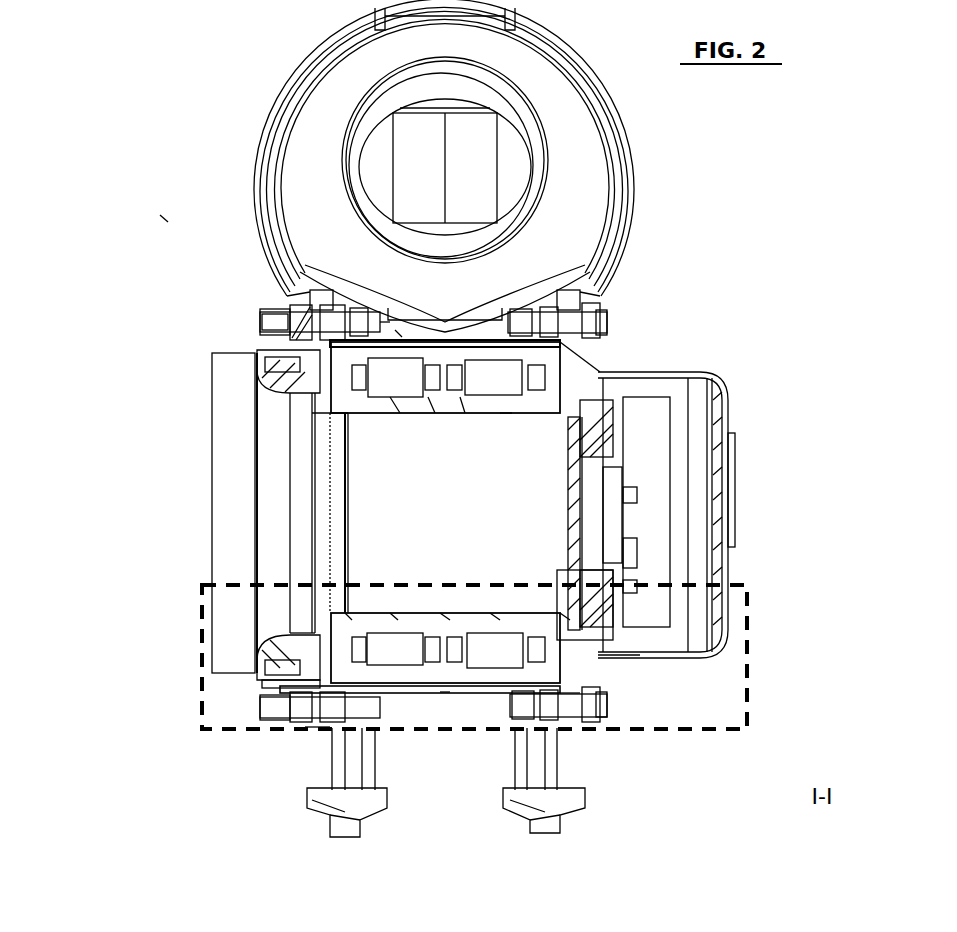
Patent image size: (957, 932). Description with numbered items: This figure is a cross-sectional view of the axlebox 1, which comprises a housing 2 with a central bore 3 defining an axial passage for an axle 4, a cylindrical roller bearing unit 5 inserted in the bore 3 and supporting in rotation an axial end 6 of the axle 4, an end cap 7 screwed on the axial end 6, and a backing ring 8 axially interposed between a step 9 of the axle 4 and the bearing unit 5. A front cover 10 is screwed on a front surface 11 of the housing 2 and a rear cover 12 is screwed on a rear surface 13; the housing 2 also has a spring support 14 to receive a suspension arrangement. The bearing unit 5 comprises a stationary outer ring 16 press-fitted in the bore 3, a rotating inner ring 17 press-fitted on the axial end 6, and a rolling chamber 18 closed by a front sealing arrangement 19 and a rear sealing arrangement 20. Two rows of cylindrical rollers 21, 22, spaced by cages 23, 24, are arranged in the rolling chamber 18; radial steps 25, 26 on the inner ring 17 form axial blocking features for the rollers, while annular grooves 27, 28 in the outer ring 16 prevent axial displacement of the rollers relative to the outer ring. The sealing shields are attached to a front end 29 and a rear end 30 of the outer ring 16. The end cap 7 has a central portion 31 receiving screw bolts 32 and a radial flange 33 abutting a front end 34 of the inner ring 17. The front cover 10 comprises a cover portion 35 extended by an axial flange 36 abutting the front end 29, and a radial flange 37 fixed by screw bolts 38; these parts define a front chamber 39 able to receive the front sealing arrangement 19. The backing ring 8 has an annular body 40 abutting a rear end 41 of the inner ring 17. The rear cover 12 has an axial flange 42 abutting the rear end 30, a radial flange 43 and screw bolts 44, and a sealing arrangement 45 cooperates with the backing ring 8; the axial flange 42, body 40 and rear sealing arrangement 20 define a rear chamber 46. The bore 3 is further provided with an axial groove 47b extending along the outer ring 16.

The axlebox 1 is at (165, 222).
The housing 2 is at (573, 250).
The central bore 3 is at (620, 360).
The axle 4 is at (208, 500).
The cylindrical roller bearing unit 5 is at (505, 417).
The axial end 6 is at (445, 512).
The end cap 7 is at (605, 440).
The backing ring 8 is at (270, 640).
The step 9 is at (305, 630).
The front cover 10 is at (725, 372).
The front surface 11 is at (600, 312).
The rear cover 12 is at (280, 715).
The rear surface 13 is at (310, 300).
The spring support 14 is at (580, 133).
The outer ring 16 is at (400, 335).
The inner ring 17 is at (395, 415).
The rolling chamber 18 is at (445, 615).
The front sealing arrangement 19 is at (510, 725).
The rear sealing arrangement 20 is at (305, 725).
The cylindrical rollers 21 is at (493, 377).
The cylindrical rollers 22 is at (395, 377).
The cage 23 is at (462, 415).
The cage 24 is at (430, 415).
The radial step 25 is at (495, 615).
The radial step 26 is at (395, 615).
The annular groove 27 is at (470, 700).
The annular groove 28 is at (385, 660).
The front end 29 is at (590, 350).
The rear end 30 is at (255, 358).
The central portion 31 is at (635, 590).
The screw bolts 32 is at (640, 555).
The radial flange 33 is at (600, 640).
The front end 34 is at (585, 380).
The cover portion 35 is at (735, 520).
The axial flange 36 is at (620, 660).
The radial flange 37 is at (570, 710).
The screw bolts 38 is at (600, 705).
The front chamber 39 is at (565, 615).
The annular body 40 is at (310, 410).
The rear end 41 is at (320, 415).
The axial flange 42 is at (290, 318).
The radial flange 43 is at (335, 790).
The screw bolts 44 is at (262, 322).
The sealing arrangement 45 is at (280, 680).
The rear chamber 46 is at (350, 615).
The axial groove 47b is at (443, 700).